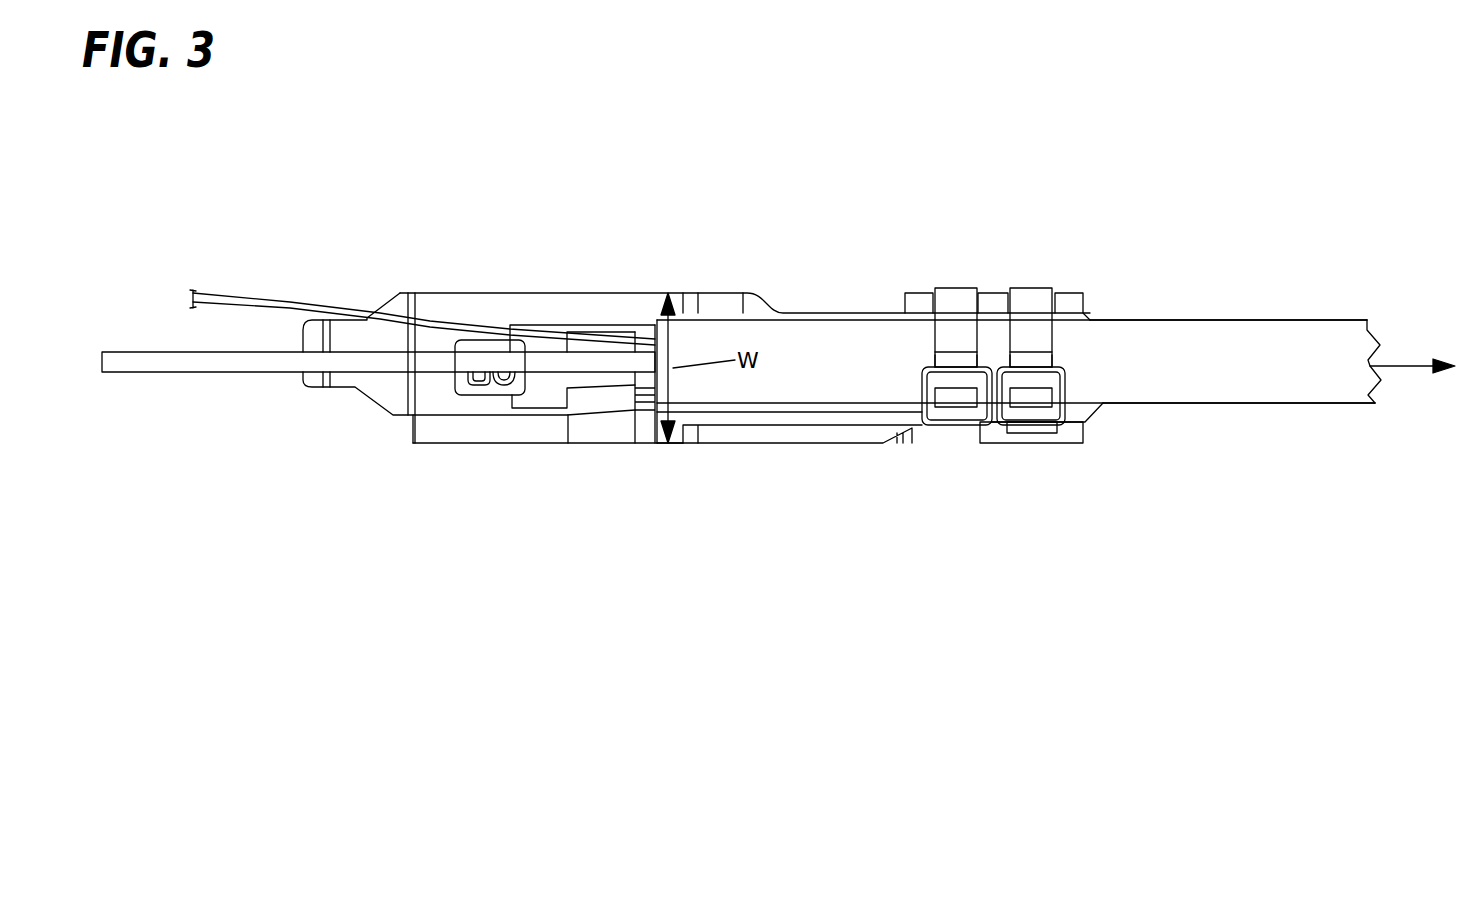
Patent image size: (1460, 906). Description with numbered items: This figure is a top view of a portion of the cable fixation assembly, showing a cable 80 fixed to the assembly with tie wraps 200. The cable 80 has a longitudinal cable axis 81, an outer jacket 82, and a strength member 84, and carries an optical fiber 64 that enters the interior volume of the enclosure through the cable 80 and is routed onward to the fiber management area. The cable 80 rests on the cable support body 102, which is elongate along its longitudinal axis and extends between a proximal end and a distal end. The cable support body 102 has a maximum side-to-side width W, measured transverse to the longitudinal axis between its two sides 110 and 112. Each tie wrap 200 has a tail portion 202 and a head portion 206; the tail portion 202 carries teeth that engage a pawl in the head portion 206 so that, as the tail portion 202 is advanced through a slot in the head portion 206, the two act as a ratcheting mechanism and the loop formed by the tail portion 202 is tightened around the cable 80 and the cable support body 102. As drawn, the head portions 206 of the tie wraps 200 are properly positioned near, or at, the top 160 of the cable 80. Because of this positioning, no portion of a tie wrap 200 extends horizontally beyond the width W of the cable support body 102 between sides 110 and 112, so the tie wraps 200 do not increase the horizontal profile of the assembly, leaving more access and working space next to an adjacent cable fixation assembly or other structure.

The optical fiber 64 is at (241, 295).
The cable 80 is at (1347, 328).
The longitudinal cable axis 81 is at (1418, 366).
The outer jacket 82 is at (1226, 330).
The strength member 84 is at (192, 365).
The cable support body 102 is at (571, 240).
The side of the cable support body 110 is at (707, 498).
The side of the cable support body 112 is at (710, 240).
The top of the cable 160 is at (1296, 378).
The tie wrap 200 is at (957, 308).
The tail portion 202 is at (952, 338).
The head portion 206 is at (955, 413).